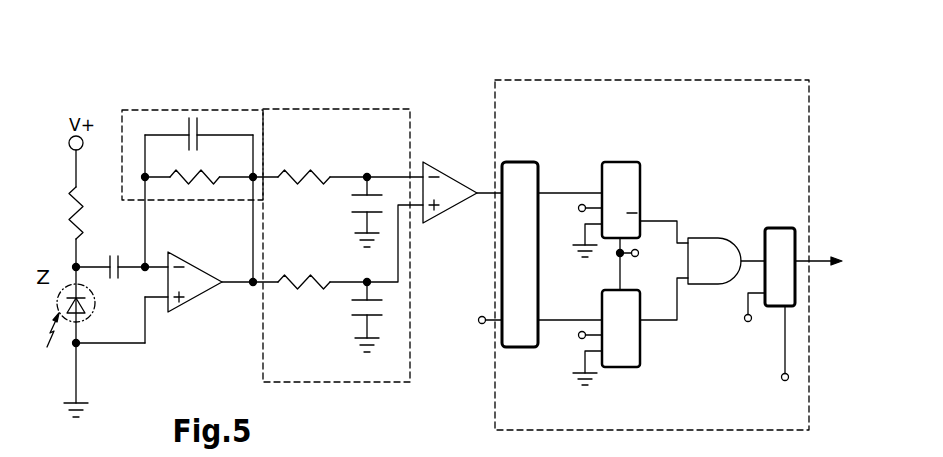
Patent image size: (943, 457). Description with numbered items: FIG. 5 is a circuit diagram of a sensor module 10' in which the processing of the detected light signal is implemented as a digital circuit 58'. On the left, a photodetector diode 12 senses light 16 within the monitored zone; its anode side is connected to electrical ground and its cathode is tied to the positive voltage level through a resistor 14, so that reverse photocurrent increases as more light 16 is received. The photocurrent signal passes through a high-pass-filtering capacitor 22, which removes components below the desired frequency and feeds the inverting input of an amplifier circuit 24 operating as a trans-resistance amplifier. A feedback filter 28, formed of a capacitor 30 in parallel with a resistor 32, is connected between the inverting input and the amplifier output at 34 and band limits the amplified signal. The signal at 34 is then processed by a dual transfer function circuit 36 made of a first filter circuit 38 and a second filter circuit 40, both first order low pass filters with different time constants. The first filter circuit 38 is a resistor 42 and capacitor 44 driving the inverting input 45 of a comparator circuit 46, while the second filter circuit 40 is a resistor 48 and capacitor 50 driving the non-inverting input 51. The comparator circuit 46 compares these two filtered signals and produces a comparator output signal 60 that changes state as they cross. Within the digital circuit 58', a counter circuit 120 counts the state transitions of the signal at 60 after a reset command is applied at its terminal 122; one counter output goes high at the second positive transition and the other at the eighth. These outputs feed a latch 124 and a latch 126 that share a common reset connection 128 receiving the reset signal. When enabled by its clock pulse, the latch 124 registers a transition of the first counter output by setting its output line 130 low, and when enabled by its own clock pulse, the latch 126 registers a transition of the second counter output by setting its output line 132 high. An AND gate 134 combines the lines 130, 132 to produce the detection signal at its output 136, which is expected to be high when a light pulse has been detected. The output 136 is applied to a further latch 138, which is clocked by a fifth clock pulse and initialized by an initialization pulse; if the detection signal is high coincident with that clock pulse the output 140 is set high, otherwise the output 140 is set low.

The module 10' is at (278, 54).
The photodetector diode 12 is at (96, 308).
The resistor 14 is at (70, 211).
The light 16 is at (64, 380).
The high-pass-filtering capacitor 22 is at (113, 249).
The amplifier circuit 24 is at (201, 312).
The feedback filter 28 is at (152, 110).
The capacitor 30 is at (192, 118).
The resistor 32 is at (192, 185).
The amplifier output 34 is at (250, 290).
The dual transfer function circuit 36 is at (350, 109).
The first filter circuit 38 is at (316, 204).
The second filter circuit 40 is at (330, 310).
The resistor 42 is at (306, 170).
The capacitor 44 is at (352, 201).
The inverting input 45 is at (367, 173).
The comparator circuit 46 is at (450, 185).
The resistor 48 is at (302, 288).
The capacitor 50 is at (352, 313).
The non-inverting input 51 is at (365, 278).
The digital circuit 58' is at (652, 229).
The comparator output signal 60 is at (488, 197).
The counter circuit 120 is at (521, 170).
The terminal 122 is at (490, 325).
The latch 124 is at (622, 172).
The latch 126 is at (625, 352).
The common reset connection 128 is at (615, 258).
The output line 130 is at (652, 220).
The output line 132 is at (655, 322).
The AND gate 134 is at (709, 245).
The detection signal output 136 is at (750, 252).
The latch 138 is at (787, 285).
The output 140 is at (826, 264).